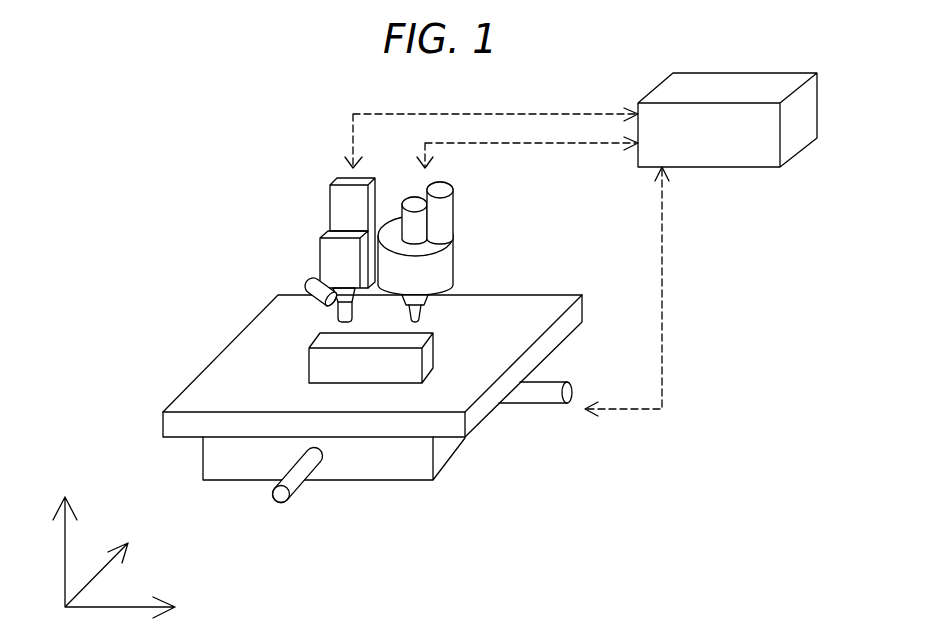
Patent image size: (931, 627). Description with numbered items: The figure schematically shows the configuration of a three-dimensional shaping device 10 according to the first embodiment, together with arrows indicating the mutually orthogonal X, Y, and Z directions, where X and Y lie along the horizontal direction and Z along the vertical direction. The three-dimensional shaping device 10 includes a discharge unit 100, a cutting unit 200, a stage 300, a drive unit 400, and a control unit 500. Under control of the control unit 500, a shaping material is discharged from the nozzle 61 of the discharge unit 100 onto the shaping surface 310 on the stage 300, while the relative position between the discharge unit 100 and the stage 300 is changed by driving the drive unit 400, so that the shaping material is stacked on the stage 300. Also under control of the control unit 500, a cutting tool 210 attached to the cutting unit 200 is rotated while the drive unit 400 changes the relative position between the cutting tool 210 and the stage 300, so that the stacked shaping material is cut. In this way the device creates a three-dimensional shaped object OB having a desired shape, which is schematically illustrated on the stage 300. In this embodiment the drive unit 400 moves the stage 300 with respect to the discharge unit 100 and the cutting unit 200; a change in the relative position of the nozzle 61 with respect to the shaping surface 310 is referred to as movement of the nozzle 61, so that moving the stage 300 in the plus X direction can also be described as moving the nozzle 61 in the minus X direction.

The three-dimensional shaping device 10 is at (228, 132).
The discharge unit 100 is at (453, 255).
The nozzle 61 is at (424, 318).
The cutting unit 200 is at (320, 251).
The cutting tool 210 is at (333, 320).
The stage 300 is at (473, 413).
The shaping surface 310 is at (533, 312).
The drive unit 400 is at (537, 428).
The control unit 500 is at (707, 167).
The three-dimensional shaped object OB is at (308, 367).